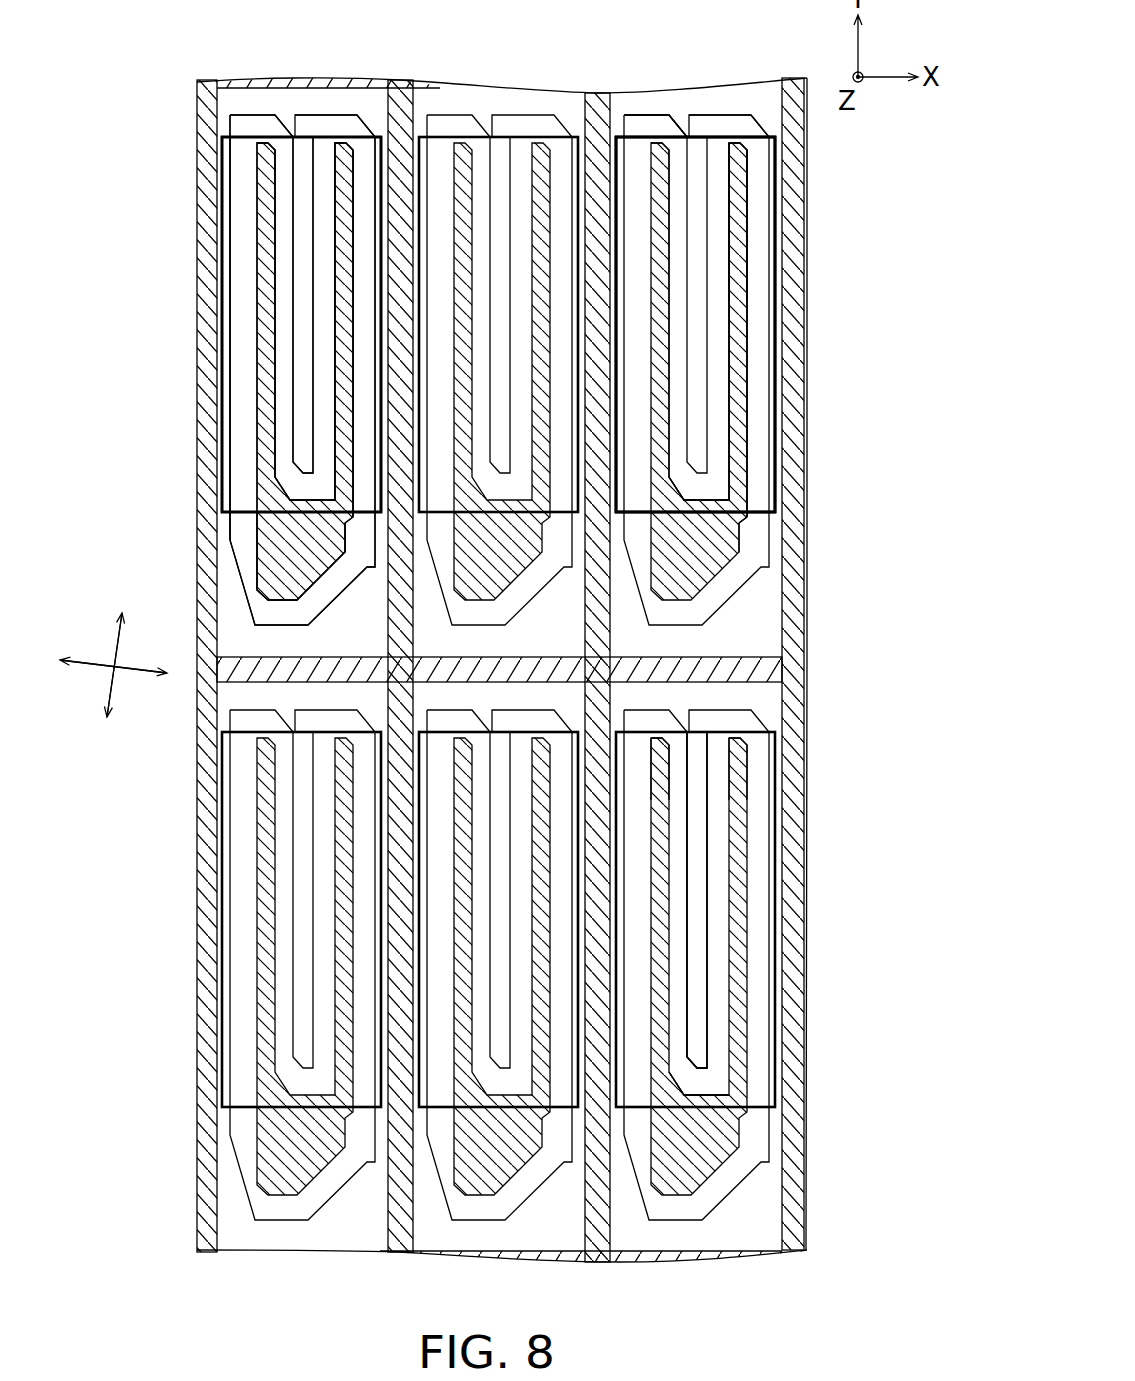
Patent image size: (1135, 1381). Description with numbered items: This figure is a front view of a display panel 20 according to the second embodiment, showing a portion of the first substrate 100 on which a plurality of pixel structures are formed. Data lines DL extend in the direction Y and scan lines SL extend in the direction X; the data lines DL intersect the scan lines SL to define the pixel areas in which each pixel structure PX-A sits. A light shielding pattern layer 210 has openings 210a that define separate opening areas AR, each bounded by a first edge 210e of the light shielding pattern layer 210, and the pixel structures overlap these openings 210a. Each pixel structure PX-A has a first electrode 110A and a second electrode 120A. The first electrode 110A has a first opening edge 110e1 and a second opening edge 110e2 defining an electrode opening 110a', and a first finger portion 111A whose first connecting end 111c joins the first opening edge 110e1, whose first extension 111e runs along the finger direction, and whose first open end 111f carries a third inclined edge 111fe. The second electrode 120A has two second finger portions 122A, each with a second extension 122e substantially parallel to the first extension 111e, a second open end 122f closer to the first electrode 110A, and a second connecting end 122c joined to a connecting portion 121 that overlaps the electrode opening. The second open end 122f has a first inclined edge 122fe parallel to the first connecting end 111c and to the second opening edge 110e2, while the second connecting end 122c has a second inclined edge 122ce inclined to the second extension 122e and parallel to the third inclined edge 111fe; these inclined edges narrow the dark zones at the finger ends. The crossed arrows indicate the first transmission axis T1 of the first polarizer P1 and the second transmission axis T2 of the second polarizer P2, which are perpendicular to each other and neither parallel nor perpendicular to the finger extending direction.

The first substrate 100 is at (290, 100).
The display panel 20 is at (908, 1305).
The opening 210a is at (680, 127).
The opening area AR is at (655, 126).
The first edge 210e is at (758, 150).
The light shielding pattern layer 210 is at (695, 324).
The first electrode 110A is at (146, 173).
The first opening edge 110e1 is at (254, 128).
The second opening edge 110e2 is at (348, 127).
The electrode opening 110a' is at (193, 338).
The first finger portion 111A is at (300, 300).
The first connecting end 111c is at (688, 730).
The first extension 111e is at (698, 913).
The first open end 111f is at (696, 1052).
The third inclined edge 111fe is at (669, 1074).
The pixel structure PX-A is at (90, 520).
The second electrode 120A is at (146, 480).
The connecting portion 121 is at (270, 545).
The second finger portion 122A is at (335, 482).
The second open end 122f is at (745, 152).
The second extension 122e is at (742, 300).
The second connecting end 122c is at (716, 490).
The first inclined edge 122fe is at (742, 729).
The second inclined edge 122ce is at (691, 1093).
The scan line SL is at (773, 672).
The data line DL is at (793, 715).
The first transmission axis T1 is at (113, 640).
The first polarizer P1 is at (114, 665).
The second transmission axis T2 is at (93, 665).
The second polarizer P2 is at (113, 666).